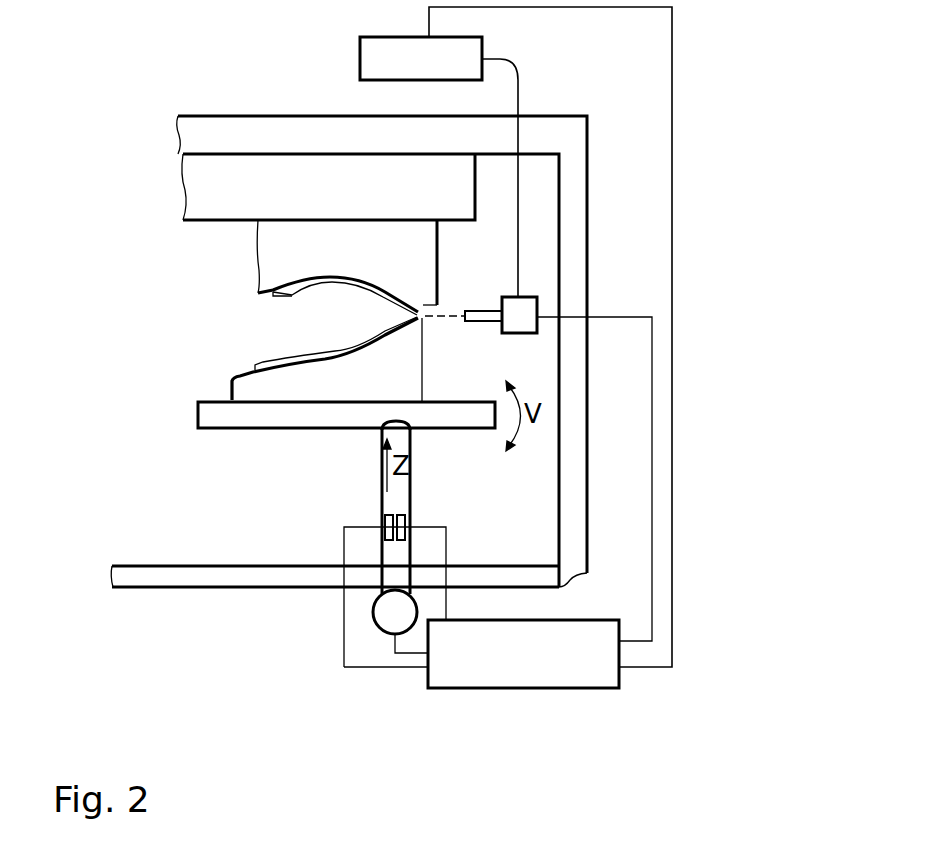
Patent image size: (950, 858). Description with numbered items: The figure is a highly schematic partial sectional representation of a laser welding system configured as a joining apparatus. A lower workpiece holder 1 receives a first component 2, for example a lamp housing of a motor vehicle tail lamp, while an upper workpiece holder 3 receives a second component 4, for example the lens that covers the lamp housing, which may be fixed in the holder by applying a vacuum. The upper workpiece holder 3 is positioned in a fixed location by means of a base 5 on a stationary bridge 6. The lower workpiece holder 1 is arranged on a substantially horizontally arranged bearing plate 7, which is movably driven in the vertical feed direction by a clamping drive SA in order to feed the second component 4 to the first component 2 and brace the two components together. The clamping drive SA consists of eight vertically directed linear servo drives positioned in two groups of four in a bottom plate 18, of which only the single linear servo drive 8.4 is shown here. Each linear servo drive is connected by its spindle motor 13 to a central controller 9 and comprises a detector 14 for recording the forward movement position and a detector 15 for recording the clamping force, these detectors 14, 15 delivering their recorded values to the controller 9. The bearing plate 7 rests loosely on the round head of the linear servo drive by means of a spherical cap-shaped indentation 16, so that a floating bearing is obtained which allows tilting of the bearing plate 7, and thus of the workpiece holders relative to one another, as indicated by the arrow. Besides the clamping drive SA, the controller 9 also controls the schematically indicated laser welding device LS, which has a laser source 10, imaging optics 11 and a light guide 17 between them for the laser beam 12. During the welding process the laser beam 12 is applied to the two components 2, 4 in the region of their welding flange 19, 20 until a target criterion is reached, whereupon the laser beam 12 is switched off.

The laser welding device LS is at (598, 88).
The laser source 10 is at (378, 60).
The light guide 17 is at (518, 210).
The stationary bridge 6 is at (577, 145).
The base 5 is at (200, 187).
The upper workpiece holder 3 is at (295, 252).
The second component 4 is at (297, 295).
The first component 2 is at (347, 355).
The lower workpiece holder 1 is at (252, 387).
The welding flange 19 is at (423, 332).
The welding flange 20 is at (423, 306).
The laser beam 12 is at (443, 318).
The imaging optics 11 is at (528, 310).
The bearing plate 7 is at (210, 415).
The spherical cap-shaped indentation 16 is at (383, 420).
The linear servo drive 8.4 is at (402, 487).
The detector 15 is at (377, 522).
The detector 14 is at (407, 520).
The clamping drive SA is at (338, 628).
The bottom plate 18 is at (205, 578).
The spindle motor 13 is at (388, 622).
The central controller 9 is at (516, 670).